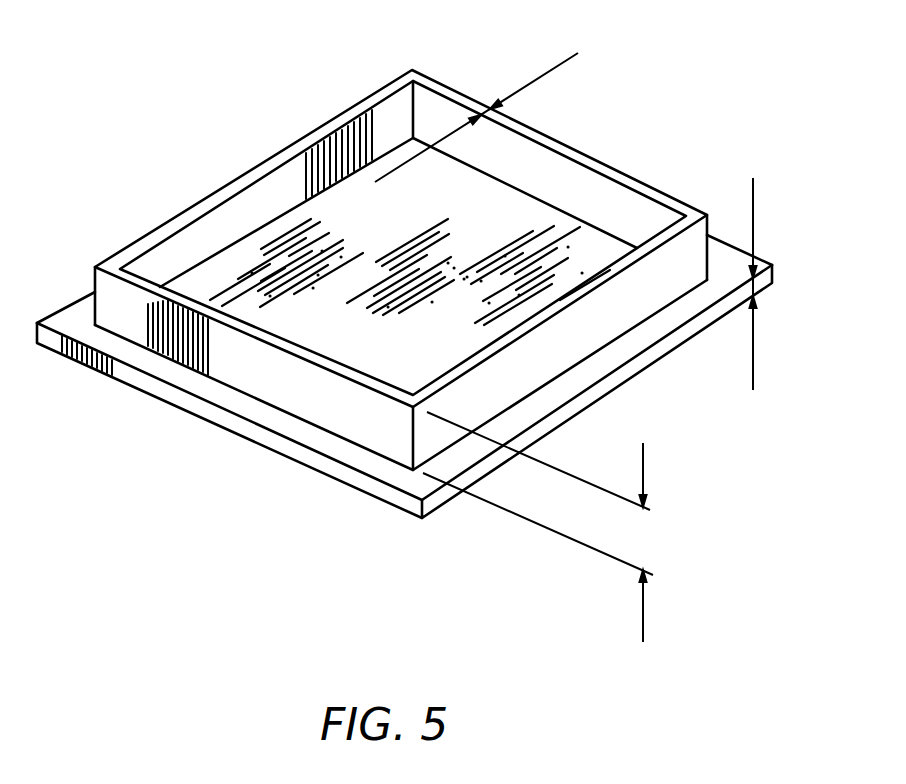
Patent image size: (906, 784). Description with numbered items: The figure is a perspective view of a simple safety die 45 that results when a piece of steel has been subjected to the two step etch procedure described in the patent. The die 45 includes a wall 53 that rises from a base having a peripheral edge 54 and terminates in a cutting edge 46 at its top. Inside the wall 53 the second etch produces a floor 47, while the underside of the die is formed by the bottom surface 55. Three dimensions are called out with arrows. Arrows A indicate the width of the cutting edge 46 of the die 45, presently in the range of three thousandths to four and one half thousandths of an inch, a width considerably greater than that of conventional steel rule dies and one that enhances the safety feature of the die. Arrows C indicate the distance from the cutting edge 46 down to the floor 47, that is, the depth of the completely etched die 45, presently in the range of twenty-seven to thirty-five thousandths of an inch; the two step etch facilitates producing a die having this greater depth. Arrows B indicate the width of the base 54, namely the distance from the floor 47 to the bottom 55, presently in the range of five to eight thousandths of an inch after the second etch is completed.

The die 45 is at (292, 105).
The cutting edge 46 is at (607, 163).
The floor 47 is at (245, 255).
The wall 53 is at (332, 412).
The base 54 is at (172, 395).
The bottom surface 55 is at (383, 500).
The arrows indicating width of cutting edge A is at (543, 75).
The arrows indicating width of base B is at (753, 240).
The arrows indicating depth of die C is at (646, 472).